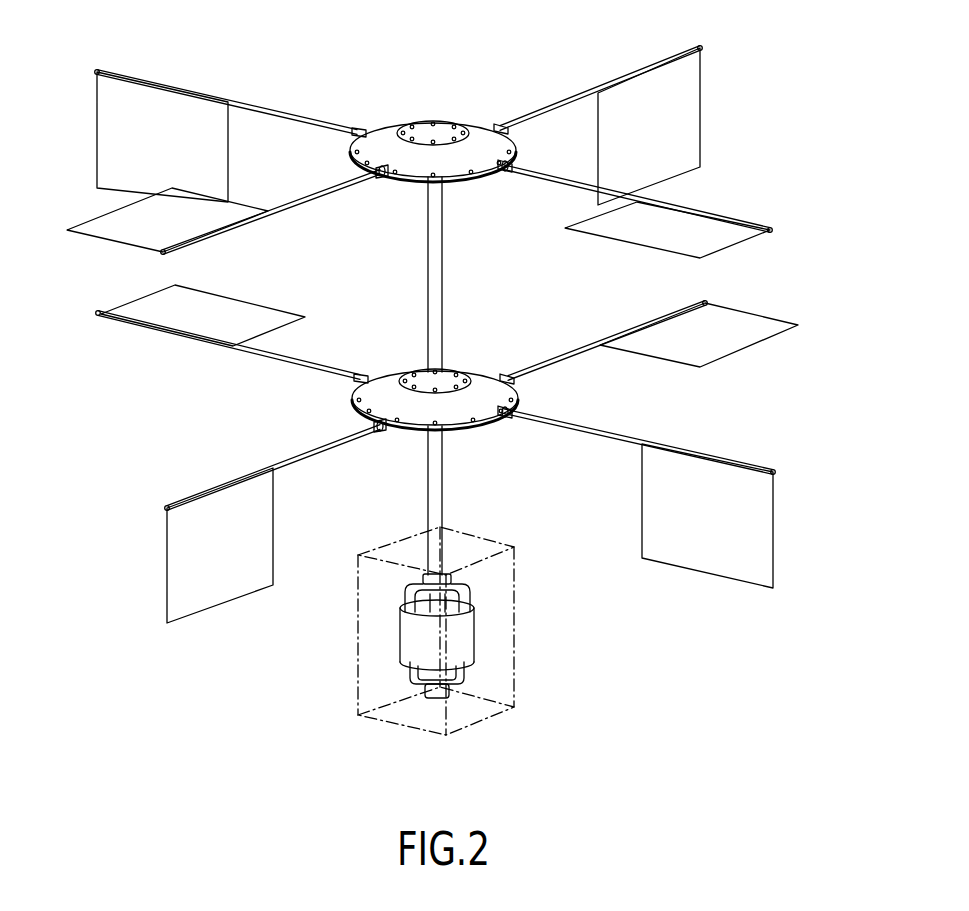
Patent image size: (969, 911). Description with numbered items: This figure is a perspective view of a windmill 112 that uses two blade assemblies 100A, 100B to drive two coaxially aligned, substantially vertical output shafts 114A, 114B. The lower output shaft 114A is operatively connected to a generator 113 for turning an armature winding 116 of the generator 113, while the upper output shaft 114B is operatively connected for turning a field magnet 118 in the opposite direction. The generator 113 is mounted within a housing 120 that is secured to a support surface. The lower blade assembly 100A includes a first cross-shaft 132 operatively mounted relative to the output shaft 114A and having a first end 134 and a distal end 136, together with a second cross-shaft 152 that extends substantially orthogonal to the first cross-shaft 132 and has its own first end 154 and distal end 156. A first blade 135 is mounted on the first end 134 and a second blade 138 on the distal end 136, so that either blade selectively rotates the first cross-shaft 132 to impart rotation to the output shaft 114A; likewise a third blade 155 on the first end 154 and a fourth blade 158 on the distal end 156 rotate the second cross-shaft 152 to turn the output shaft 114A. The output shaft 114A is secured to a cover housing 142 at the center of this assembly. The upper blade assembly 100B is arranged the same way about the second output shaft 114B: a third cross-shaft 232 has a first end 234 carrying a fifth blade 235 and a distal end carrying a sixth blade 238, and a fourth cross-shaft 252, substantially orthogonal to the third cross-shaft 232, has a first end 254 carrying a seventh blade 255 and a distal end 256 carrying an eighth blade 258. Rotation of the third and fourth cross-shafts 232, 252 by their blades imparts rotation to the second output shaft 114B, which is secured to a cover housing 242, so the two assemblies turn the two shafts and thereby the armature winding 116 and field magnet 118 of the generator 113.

The blade assembly 100A is at (730, 429).
The blade assembly 100B is at (728, 126).
The windmill 112 is at (413, 94).
The generator 113 is at (494, 631).
The output shaft 114A is at (445, 493).
The output shaft 114B is at (445, 272).
The armature winding 116 is at (400, 608).
The field magnet 118 is at (516, 578).
The housing 120 is at (540, 690).
The first cross-shaft 132 is at (580, 425).
The first end 134 is at (98, 314).
The first blade 135 is at (230, 305).
The distal end 136 is at (775, 472).
The second blade 138 is at (725, 560).
The cover housing 142 is at (393, 392).
The second cross-shaft 152 is at (545, 363).
The first end 154 is at (165, 508).
The third blade 155 is at (185, 563).
The distal end 156 is at (707, 303).
The fourth blade 158 is at (730, 340).
The third cross-shaft 232 is at (527, 179).
The first end 234 is at (97, 70).
The fifth blade 235 is at (165, 120).
The sixth blade 238 is at (640, 232).
The cover housing 242 is at (445, 122).
The fourth cross-shaft 252 is at (340, 186).
The first end 254 is at (161, 255).
The seventh blade 255 is at (95, 215).
The distal end 256 is at (701, 47).
The eighth blade 258 is at (682, 103).